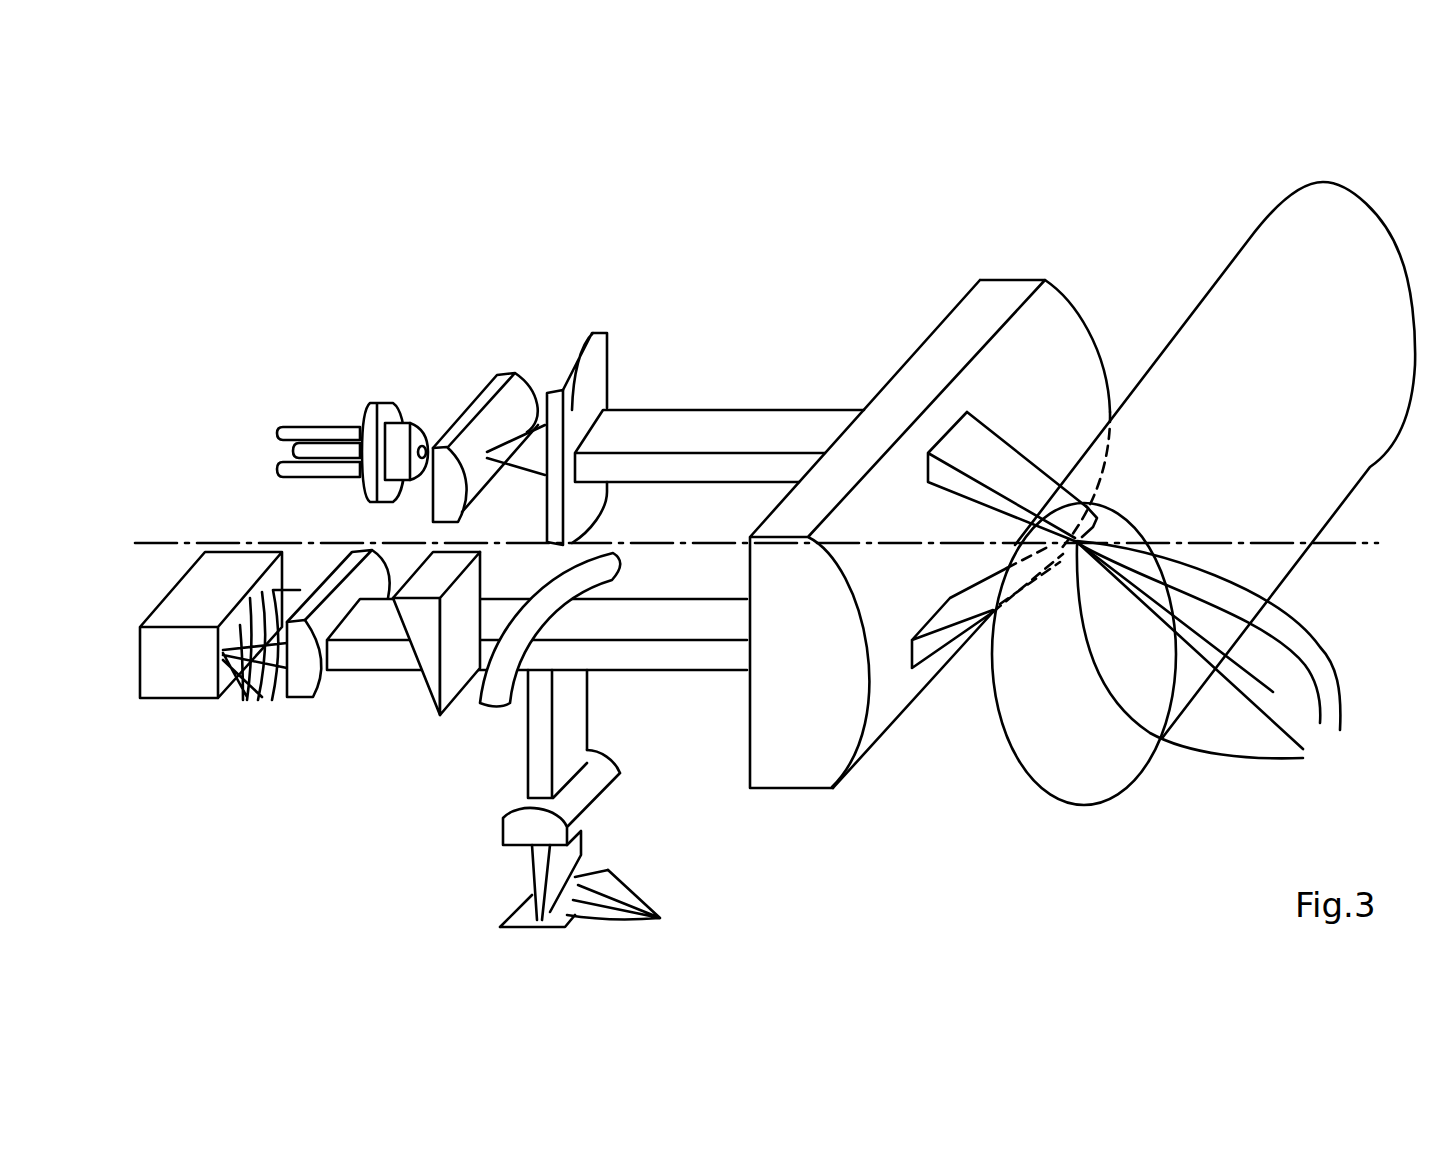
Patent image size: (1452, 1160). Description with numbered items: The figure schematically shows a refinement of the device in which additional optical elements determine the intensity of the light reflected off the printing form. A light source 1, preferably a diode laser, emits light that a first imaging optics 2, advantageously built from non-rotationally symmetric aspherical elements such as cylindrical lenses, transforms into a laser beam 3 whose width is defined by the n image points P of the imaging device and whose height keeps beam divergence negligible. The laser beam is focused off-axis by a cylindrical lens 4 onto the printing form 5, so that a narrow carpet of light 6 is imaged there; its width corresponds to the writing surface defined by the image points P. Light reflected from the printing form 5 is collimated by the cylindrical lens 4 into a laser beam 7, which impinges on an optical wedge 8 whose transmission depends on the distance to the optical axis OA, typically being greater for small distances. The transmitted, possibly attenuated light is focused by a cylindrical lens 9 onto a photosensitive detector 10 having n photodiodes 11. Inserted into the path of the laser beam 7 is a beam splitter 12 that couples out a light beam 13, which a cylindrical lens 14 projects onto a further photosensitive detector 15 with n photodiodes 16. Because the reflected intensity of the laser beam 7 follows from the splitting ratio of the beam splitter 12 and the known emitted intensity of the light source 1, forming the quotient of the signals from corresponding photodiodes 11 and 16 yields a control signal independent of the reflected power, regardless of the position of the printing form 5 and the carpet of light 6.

The light source 1 is at (370, 400).
The first imaging optics 2 is at (572, 358).
The laser beam 3 is at (680, 423).
The cylindrical lens 4 is at (905, 382).
The printing form 5 is at (1343, 468).
The carpet of light 6 is at (1146, 654).
The laser beam 7 is at (490, 615).
The optical wedge 8 is at (428, 658).
The cylindrical lens 9 is at (353, 585).
The photosensitive detector 10 is at (226, 590).
The photodiodes 11 is at (261, 667).
The beam splitter 12 is at (622, 567).
The light beam 13 is at (573, 723).
The cylindrical lens 14 is at (587, 782).
The photosensitive detector 15 is at (608, 870).
The photodiodes 16 is at (637, 902).
The image points P is at (1209, 660).
The optical axis OA is at (784, 544).